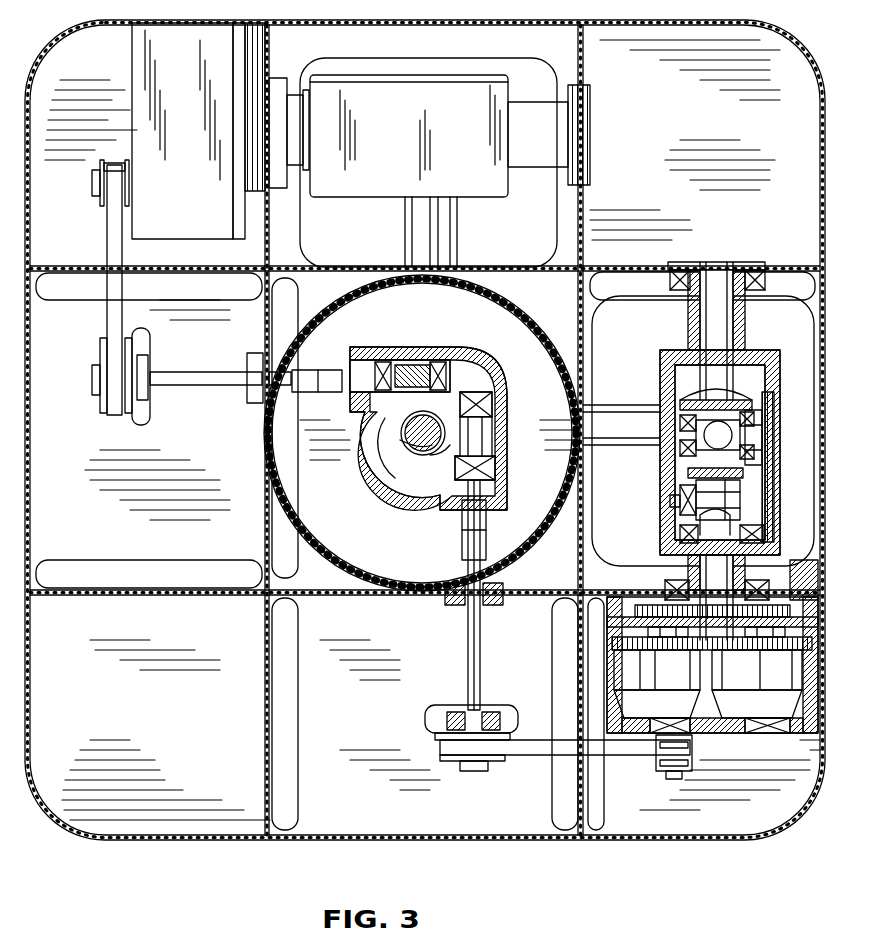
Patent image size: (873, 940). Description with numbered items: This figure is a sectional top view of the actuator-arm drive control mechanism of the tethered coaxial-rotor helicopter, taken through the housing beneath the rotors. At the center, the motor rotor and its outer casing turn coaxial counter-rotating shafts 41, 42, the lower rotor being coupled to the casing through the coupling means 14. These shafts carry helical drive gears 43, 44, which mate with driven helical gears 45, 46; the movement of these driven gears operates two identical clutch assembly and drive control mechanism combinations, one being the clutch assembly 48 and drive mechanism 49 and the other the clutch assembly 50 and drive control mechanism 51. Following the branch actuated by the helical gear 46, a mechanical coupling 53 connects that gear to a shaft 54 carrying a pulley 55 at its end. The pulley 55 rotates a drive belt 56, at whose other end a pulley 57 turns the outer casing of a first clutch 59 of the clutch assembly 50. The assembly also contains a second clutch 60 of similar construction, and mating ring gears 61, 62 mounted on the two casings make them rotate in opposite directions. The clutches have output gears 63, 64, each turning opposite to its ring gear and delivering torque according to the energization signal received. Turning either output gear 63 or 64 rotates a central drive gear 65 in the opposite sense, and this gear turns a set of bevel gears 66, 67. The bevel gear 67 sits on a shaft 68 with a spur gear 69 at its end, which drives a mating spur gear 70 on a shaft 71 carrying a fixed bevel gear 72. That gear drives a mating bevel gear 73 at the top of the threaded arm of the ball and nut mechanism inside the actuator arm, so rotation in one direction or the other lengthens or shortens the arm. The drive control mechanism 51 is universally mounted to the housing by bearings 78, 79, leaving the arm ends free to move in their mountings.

The coupling means 14 is at (315, 537).
The counter-rotating shaft 41 is at (408, 432).
The counter-rotating shaft 42 is at (416, 455).
The helical drive gear 43 is at (390, 442).
The helical drive gear 44 is at (439, 459).
The driven helical gear 45 is at (424, 369).
The driven helical gear 46 is at (492, 429).
The clutch assembly 48 is at (136, 95).
The drive control mechanism 49 is at (485, 186).
The clutch assembly 50 is at (697, 733).
The drive control mechanism 51 is at (688, 323).
The mechanical coupling 53 is at (312, 389).
The shaft 54 is at (198, 378).
The pulley 55 is at (102, 400).
The drive belt 56 is at (123, 317).
The pulley 57 is at (102, 164).
The first clutch 59 is at (662, 680).
The second clutch 60 is at (762, 680).
The ring gear 61 is at (616, 640).
The ring gear 62 is at (755, 650).
The output gear 63 is at (660, 610).
The output gear 64 is at (790, 595).
The central drive gear 65 is at (748, 618).
The bevel gear 66 is at (672, 520).
The bevel gear 67 is at (736, 491).
The shaft 68 is at (744, 505).
The spur gear 69 is at (764, 521).
The spur gear 70 is at (759, 436).
The shaft 71 is at (764, 428).
The bevel gear 72 is at (746, 395).
The bevel gear 73 is at (672, 398).
The bearing 78 is at (753, 275).
The bearing 79 is at (751, 462).